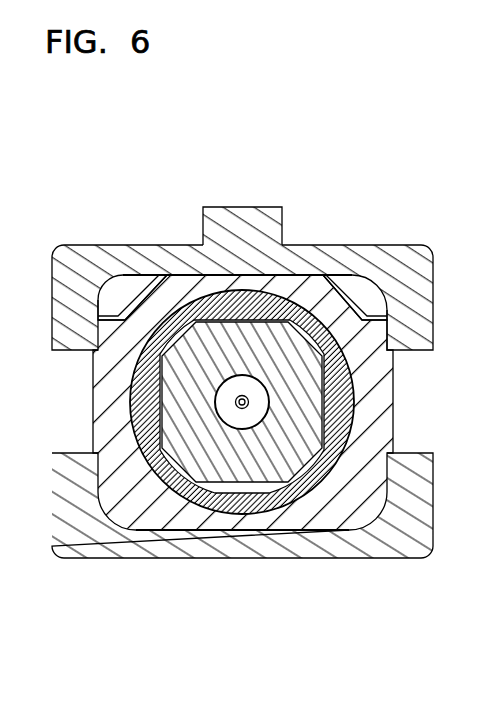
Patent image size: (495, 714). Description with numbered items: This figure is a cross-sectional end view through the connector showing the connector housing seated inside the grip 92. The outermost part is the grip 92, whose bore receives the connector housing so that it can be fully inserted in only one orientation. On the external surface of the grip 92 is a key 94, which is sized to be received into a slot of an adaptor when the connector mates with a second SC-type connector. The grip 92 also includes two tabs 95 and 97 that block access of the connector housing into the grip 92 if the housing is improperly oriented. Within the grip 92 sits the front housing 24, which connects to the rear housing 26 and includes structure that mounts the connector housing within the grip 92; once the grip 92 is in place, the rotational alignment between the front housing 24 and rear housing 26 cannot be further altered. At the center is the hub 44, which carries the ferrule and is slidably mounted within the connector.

The grip 92 is at (148, 250).
The key 94 is at (255, 215).
The tab 95 is at (110, 295).
The tab 97 is at (363, 298).
The front housing 24 is at (305, 292).
The rear housing 26 is at (343, 393).
The hub 44 is at (258, 466).